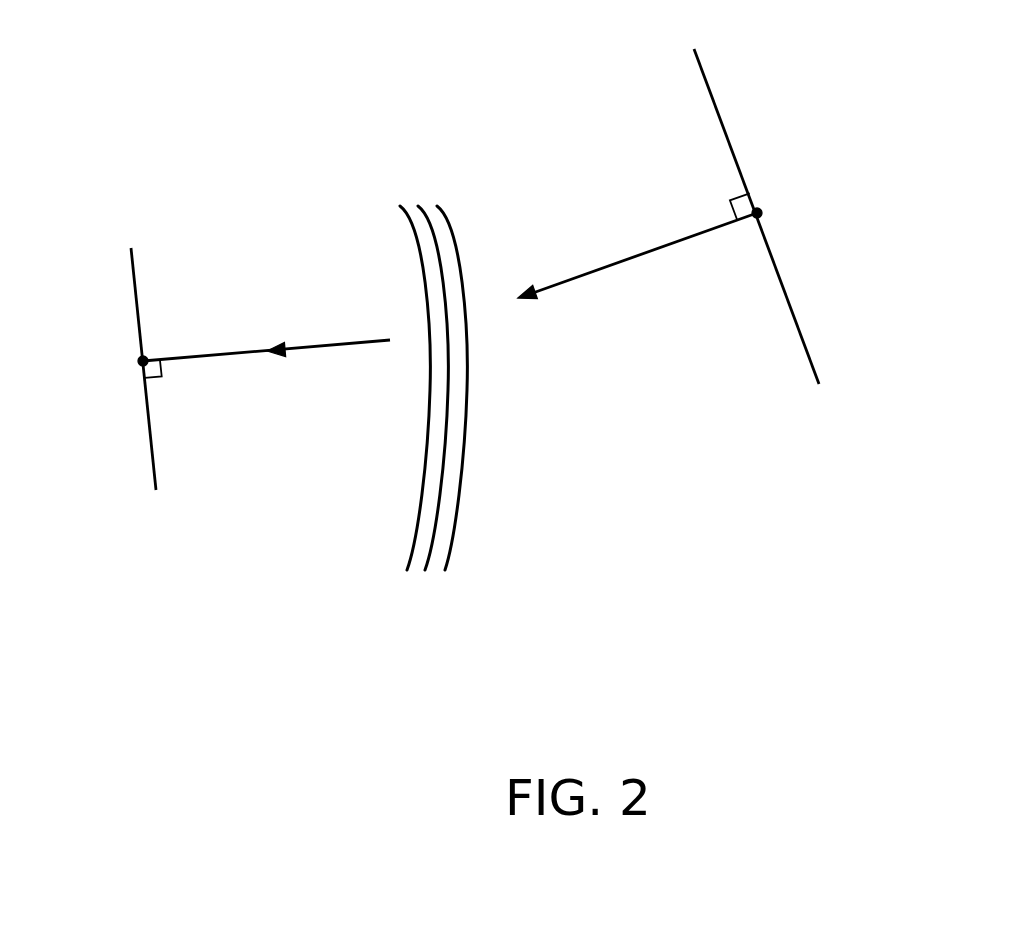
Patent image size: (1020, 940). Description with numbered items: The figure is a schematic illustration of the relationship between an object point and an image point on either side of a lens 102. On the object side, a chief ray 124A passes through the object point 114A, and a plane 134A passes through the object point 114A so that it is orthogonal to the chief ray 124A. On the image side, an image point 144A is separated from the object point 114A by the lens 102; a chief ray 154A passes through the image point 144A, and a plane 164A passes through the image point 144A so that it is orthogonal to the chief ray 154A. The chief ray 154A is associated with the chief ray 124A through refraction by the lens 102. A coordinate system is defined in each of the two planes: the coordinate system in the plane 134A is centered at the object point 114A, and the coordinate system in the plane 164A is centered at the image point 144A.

The lens 102 is at (482, 230).
The object point 114A is at (763, 211).
The chief ray 124A is at (591, 260).
The plane 134A is at (777, 267).
The image point 144A is at (140, 360).
The chief ray 154A is at (242, 350).
The plane 164A is at (153, 450).